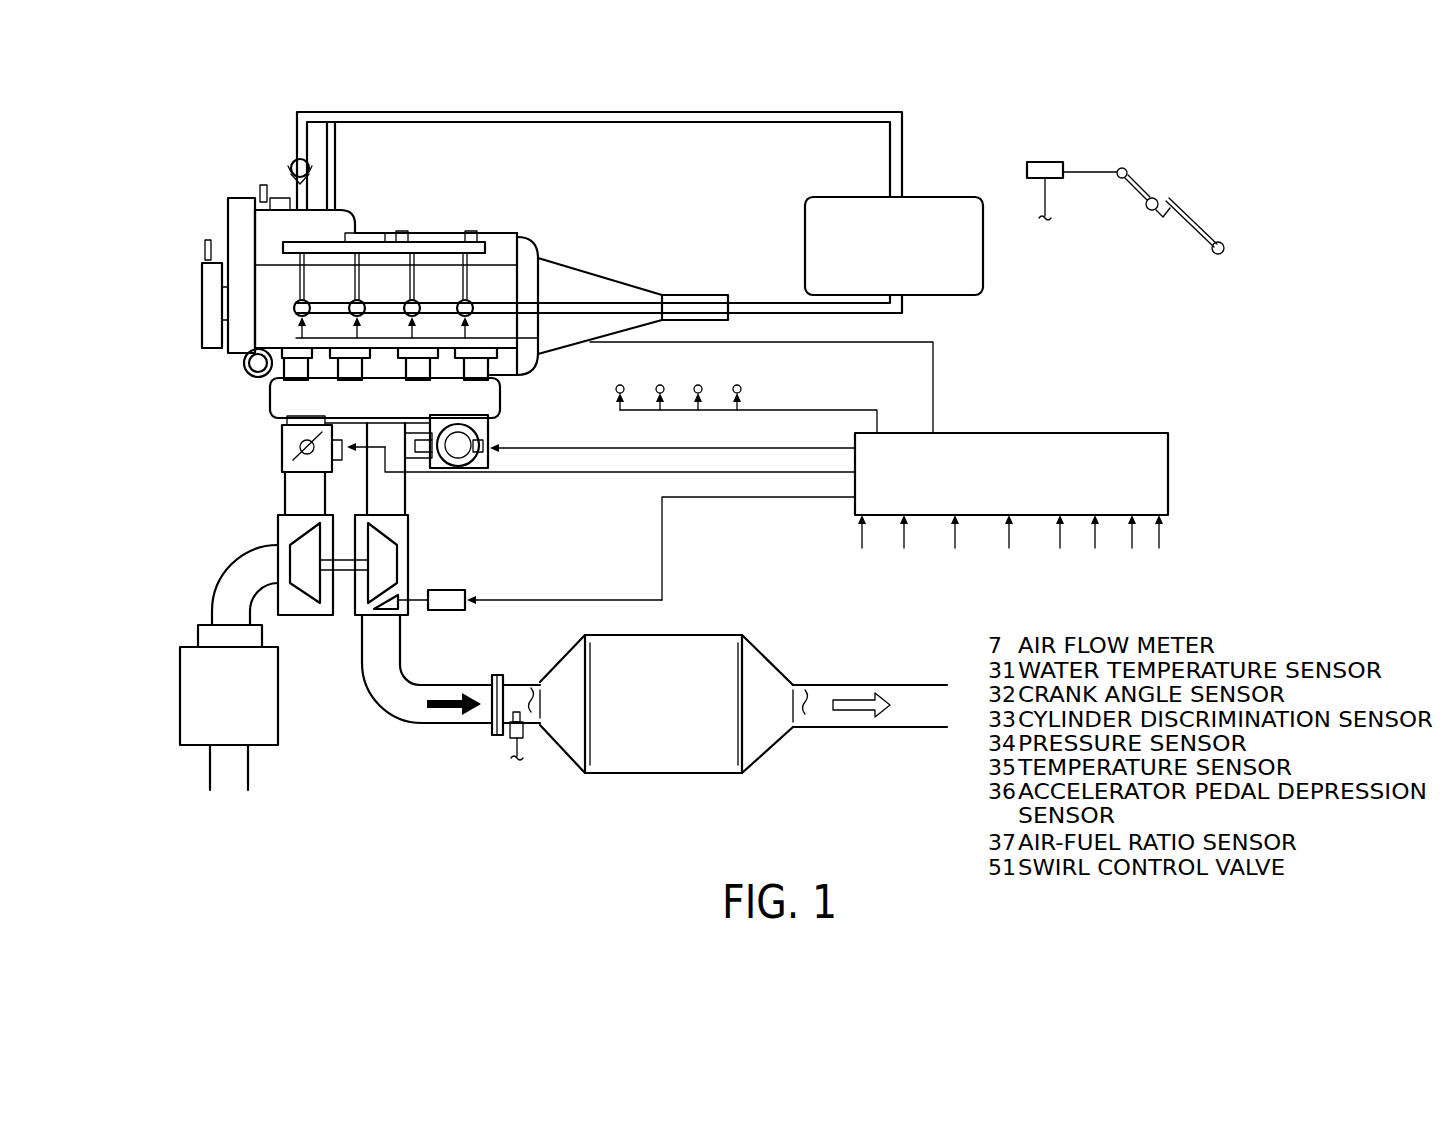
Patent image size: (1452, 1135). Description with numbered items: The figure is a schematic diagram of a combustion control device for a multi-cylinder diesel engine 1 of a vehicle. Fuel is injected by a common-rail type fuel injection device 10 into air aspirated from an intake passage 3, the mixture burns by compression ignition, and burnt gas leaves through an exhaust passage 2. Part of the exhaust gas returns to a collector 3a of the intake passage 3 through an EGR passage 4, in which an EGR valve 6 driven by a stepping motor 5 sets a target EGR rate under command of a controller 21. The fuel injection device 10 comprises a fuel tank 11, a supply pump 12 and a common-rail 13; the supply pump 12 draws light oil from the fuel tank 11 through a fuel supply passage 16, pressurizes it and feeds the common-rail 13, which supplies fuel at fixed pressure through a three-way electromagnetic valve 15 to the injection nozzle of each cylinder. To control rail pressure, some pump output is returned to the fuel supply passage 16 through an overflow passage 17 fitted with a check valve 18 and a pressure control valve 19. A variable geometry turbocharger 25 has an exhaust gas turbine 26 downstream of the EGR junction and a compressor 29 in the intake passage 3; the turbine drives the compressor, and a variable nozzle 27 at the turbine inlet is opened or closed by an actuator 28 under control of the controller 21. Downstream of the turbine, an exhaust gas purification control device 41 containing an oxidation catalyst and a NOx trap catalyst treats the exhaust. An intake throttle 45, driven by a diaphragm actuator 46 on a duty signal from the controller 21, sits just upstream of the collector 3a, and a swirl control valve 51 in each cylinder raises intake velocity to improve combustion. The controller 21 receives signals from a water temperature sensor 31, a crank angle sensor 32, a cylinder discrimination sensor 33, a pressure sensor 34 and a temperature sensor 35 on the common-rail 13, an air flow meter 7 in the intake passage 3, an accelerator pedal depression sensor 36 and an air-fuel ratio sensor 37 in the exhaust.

The multi-cylinder diesel engine 1 is at (578, 262).
The exhaust passage 2 is at (418, 730).
The intake passage 3 is at (222, 587).
The collector 3a is at (268, 400).
The exhaust gas recirculation (EGR) passage 4 is at (418, 460).
The stepping motor 5 is at (483, 463).
The EGR valve 6 is at (490, 428).
The air flow meter 7 is at (258, 637).
The common-rail type fuel injection device 10 is at (527, 193).
The fuel tank 11 is at (943, 196).
The supply pump 12 is at (344, 206).
The common-rail 13 is at (320, 241).
The three-way electromagnetic valve 15 is at (296, 305).
The fuel supply passage 16 is at (903, 115).
The overflow passage 17 is at (296, 157).
The check valve 18 is at (303, 159).
The pressure control valve 19 is at (275, 197).
The controller 21 is at (1105, 433).
The variable geometry turbocharger 25 is at (352, 620).
The exhaust gas turbine 26 is at (392, 543).
The variable nozzle 27 is at (400, 606).
The actuator 28 is at (455, 590).
The compressor 29 is at (298, 545).
The water temperature sensor 31 is at (246, 371).
The crank angle sensor 32 is at (200, 284).
The cylinder discrimination sensor 33 is at (261, 188).
The pressure sensor 34 is at (404, 231).
The temperature sensor 35 is at (474, 231).
The accelerator pedal depression sensor 36 is at (1052, 161).
The air-fuel ratio sensor 37 is at (510, 740).
The exhaust gas purification control device 41 is at (712, 785).
The intake throttle 45 is at (290, 456).
The diaphragm actuator 46 is at (341, 462).
The swirl control valve 51 is at (623, 384).